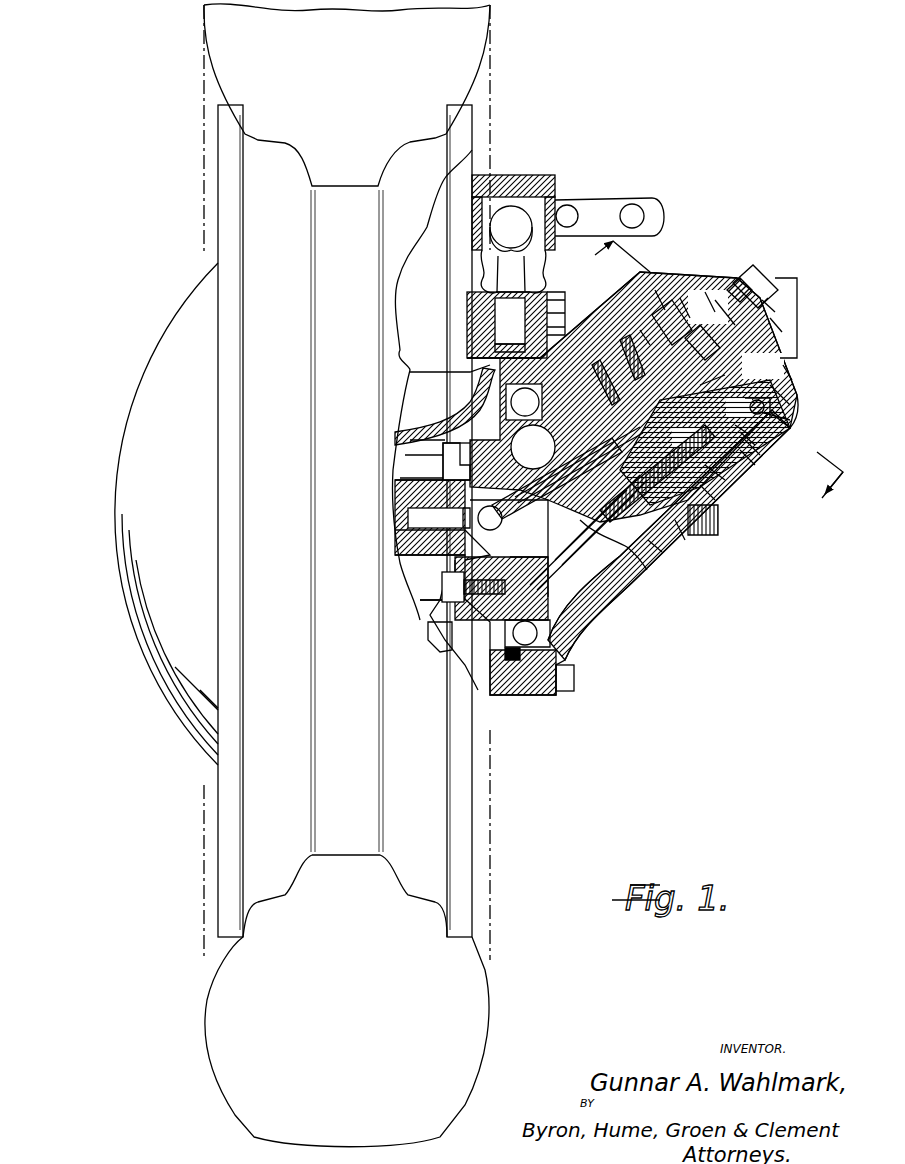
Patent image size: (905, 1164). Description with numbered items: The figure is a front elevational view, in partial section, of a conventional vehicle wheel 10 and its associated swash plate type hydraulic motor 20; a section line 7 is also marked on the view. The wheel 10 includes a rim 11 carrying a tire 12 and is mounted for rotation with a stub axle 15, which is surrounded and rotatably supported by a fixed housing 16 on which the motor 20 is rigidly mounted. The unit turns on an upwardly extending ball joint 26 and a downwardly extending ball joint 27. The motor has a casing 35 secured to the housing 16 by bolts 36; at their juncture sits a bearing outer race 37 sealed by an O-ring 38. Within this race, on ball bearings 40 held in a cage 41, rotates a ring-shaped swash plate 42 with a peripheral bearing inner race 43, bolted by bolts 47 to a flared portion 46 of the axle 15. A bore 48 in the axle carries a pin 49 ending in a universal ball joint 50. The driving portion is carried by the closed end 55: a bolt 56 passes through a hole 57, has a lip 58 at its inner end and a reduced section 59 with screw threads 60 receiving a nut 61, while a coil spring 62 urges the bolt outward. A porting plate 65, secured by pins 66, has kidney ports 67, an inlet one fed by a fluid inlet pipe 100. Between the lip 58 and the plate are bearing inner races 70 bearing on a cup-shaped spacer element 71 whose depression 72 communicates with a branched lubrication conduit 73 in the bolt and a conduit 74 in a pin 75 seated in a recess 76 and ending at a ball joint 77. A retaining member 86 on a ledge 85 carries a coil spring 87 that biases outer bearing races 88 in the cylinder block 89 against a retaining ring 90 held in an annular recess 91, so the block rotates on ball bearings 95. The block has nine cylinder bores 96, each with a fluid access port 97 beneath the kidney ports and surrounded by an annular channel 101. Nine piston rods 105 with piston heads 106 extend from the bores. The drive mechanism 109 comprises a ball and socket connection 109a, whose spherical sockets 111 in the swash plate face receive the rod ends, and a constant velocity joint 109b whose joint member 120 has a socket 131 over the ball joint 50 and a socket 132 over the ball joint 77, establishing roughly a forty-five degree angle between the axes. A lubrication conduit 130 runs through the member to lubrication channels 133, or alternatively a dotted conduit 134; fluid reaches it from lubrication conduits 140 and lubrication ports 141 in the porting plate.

The section line 7- 7 is at (706, 384).
The vehicle wheel 10 is at (182, 275).
The rim 11 is at (218, 243).
The tire 12 is at (203, 48).
The stub axle 15 is at (395, 550).
The housing 16 is at (425, 445).
The swash plate type hydraulic motor 20 is at (610, 604).
The ball joint 26 is at (511, 222).
The ball joint 27 is at (440, 642).
The casing 35 is at (620, 584).
The bolts 36 is at (572, 680).
The bearing outer race 37 is at (530, 655).
The O-ring 38 is at (506, 655).
The ball bearings 40 is at (510, 396).
The ball bearing cage 41 is at (540, 640).
The swash plate 42 is at (530, 605).
The bearing inner race 43 is at (550, 625).
The flared portion 46 is at (443, 472).
The bolts 47 is at (445, 465).
The bore 48 is at (412, 522).
The pin 49 is at (402, 531).
The universal ball joint 50 is at (425, 560).
The closed end 55 is at (795, 398).
The bolt 56 is at (722, 308).
The hole 57 is at (788, 336).
The lip 58 is at (705, 442).
The reduced section 59 is at (790, 312).
The screw threads 60 is at (770, 292).
The nut 61 is at (788, 295).
The coil spring 62 is at (740, 290).
The porting plate 65 is at (790, 368).
The pins 66 is at (785, 406).
The kidney ports 67 is at (680, 305).
The bearing inner races 70 is at (755, 442).
The cup-shaped spacer element 71 is at (725, 370).
The depression 72 is at (702, 327).
The branched lubrication conduit 73 is at (750, 456).
The lubrication conduit 74 is at (604, 500).
The pin 75 is at (620, 500).
The recess 76 is at (630, 355).
The ball joint 77 is at (608, 385).
The ledge 85 is at (715, 466).
The retaining member 86 is at (700, 522).
The coil spring 87 is at (708, 488).
The outer bearing races 88 is at (750, 432).
The cylinder block 89 is at (676, 518).
The retaining ring 90 is at (758, 408).
The annular recess 91 is at (745, 425).
The ball bearings 95 is at (645, 335).
The cylinder bores 96 is at (510, 356).
The fluid access port 97 is at (660, 295).
The fluid inlet pipe 100 is at (797, 352).
The annular channel 101 is at (785, 420).
The piston rods 105 is at (500, 346).
The piston head 106 is at (632, 215).
The drive mechanism 109 is at (655, 545).
The ball and socket connection 109a is at (485, 375).
The constant velocity joint 109b is at (647, 570).
The spherical sockets 111 is at (500, 416).
The joint member 120 is at (440, 458).
The lubrication conduit 130 is at (568, 548).
The socket 131 is at (505, 525).
The socket 132 is at (567, 473).
The lubrication channels 133 is at (428, 573).
The lubrication conduit 134 is at (440, 490).
The lubrication conduits 140 is at (685, 305).
The lubrication ports 141 is at (710, 298).